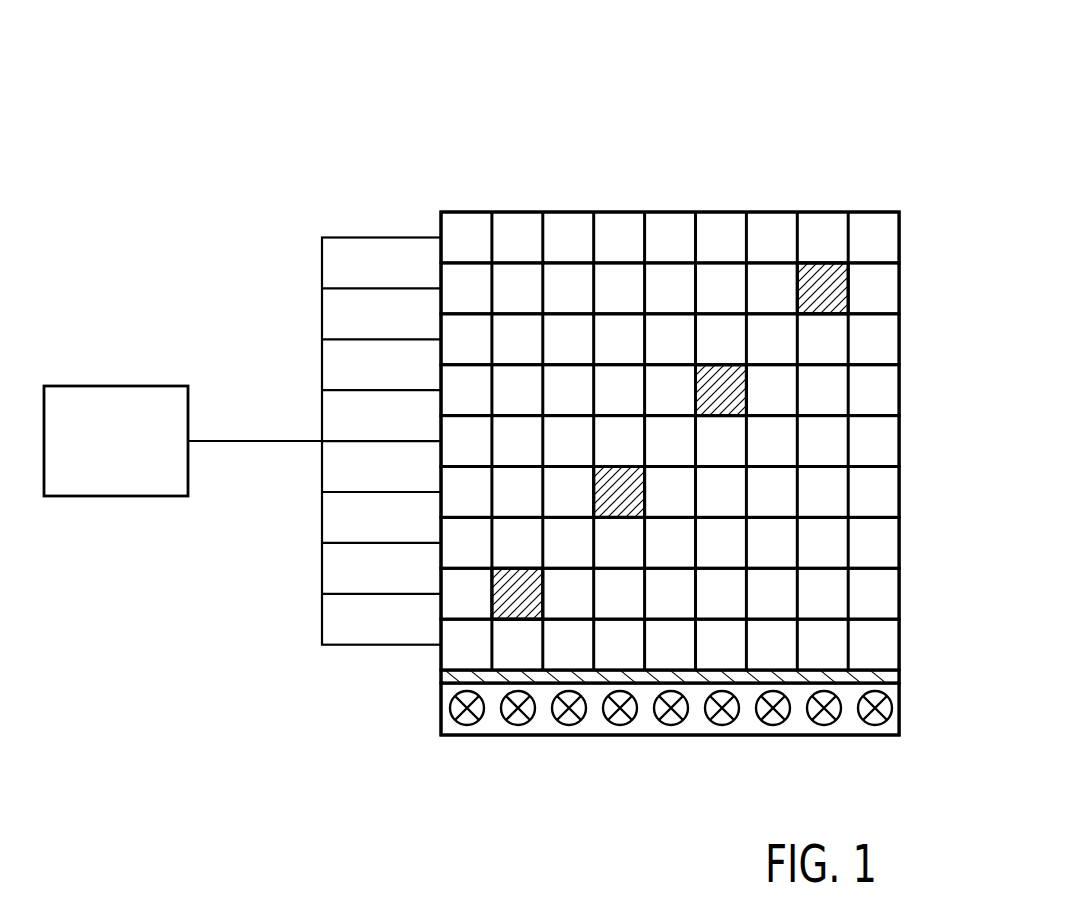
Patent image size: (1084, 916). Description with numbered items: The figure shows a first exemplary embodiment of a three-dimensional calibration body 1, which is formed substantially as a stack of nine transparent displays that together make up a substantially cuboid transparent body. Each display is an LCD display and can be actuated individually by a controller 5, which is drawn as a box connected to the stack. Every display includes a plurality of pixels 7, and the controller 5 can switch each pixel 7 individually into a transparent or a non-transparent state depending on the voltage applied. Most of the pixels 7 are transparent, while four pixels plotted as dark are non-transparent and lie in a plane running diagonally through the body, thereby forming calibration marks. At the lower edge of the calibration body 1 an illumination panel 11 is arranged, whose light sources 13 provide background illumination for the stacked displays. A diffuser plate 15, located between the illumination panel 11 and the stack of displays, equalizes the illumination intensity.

The 3D calibration body 1 is at (663, 70).
The controller 5 is at (110, 386).
The pixel 7 is at (520, 225).
The illumination panel 11 is at (542, 725).
The light source 13 is at (466, 728).
The diffuser plate 15 is at (885, 675).